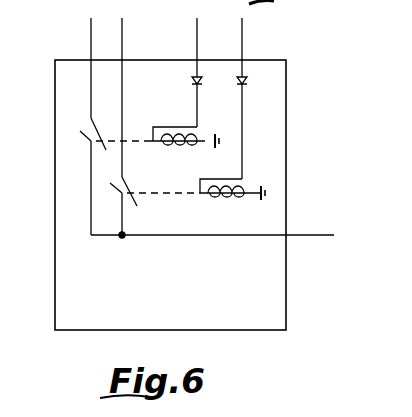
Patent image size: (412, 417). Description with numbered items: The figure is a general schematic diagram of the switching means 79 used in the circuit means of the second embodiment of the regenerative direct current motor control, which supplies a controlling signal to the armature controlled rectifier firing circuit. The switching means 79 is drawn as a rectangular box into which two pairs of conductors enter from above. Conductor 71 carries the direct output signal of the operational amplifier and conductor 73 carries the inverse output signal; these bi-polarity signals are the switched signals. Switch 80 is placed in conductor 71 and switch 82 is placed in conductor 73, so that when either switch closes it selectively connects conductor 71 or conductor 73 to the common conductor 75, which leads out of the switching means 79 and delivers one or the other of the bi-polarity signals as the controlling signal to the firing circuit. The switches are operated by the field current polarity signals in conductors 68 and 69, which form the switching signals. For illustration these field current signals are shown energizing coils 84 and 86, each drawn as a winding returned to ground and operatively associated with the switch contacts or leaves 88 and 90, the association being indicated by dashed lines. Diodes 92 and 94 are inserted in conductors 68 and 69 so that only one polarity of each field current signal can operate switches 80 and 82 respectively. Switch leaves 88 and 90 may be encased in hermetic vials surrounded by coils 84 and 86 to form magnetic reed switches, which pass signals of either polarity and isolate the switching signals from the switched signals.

The conductor 68 is at (242, 42).
The conductor 69 is at (197, 42).
The conductor 71 is at (122, 52).
The conductor 73 is at (91, 41).
The conductor 75 is at (318, 227).
The switching means 79 is at (253, 331).
The switch 80 is at (214, 229).
The switch 82 is at (188, 176).
The coil 84 is at (204, 188).
The coil 86 is at (186, 128).
The switch contacts or leaves 88 is at (121, 194).
The switch contacts or leaves 90 is at (91, 141).
The diode 92 is at (247, 82).
The diode 94 is at (203, 81).